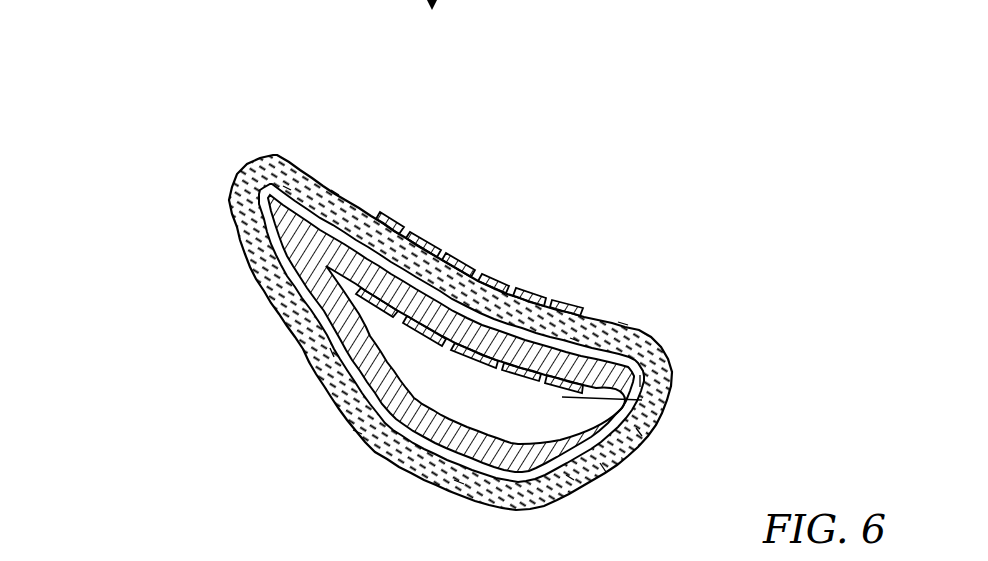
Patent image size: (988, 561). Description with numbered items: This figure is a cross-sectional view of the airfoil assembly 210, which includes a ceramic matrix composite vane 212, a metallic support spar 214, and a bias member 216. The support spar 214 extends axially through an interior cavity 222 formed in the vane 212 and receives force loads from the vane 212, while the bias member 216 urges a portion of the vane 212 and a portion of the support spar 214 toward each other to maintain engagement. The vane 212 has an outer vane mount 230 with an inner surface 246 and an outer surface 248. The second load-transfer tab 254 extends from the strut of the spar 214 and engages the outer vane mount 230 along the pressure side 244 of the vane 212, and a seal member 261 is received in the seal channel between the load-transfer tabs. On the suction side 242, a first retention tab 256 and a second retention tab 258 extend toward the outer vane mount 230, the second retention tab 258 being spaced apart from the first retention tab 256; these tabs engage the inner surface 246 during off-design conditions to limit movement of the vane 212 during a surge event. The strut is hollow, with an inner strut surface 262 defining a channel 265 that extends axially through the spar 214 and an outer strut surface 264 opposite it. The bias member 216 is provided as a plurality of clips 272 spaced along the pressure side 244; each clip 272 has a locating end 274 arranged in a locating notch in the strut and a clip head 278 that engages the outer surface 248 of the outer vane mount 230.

The airfoil assembly 210 is at (146, 131).
The ceramic matrix composite vane 212 is at (686, 300).
The metallic support spar 214 is at (571, 483).
The bias member 216 is at (540, 243).
The interior cavity 222 is at (650, 381).
The outer vane mount 230 is at (623, 313).
The suction side 242 is at (357, 437).
The pressure side 244 is at (358, 207).
The inner surface 246 is at (287, 188).
The outer surface 248 is at (335, 192).
The second load-transfer tab 254 is at (622, 358).
The first retention tab 256 is at (326, 353).
The second retention tab 258 is at (458, 488).
The seal member 261 is at (574, 333).
The inner strut surface 262 is at (640, 432).
The outer strut surface 264 is at (605, 468).
The channel 265 is at (538, 426).
The clip 272 is at (456, 243).
The locating end 274 is at (642, 400).
The clip head 278 is at (466, 257).